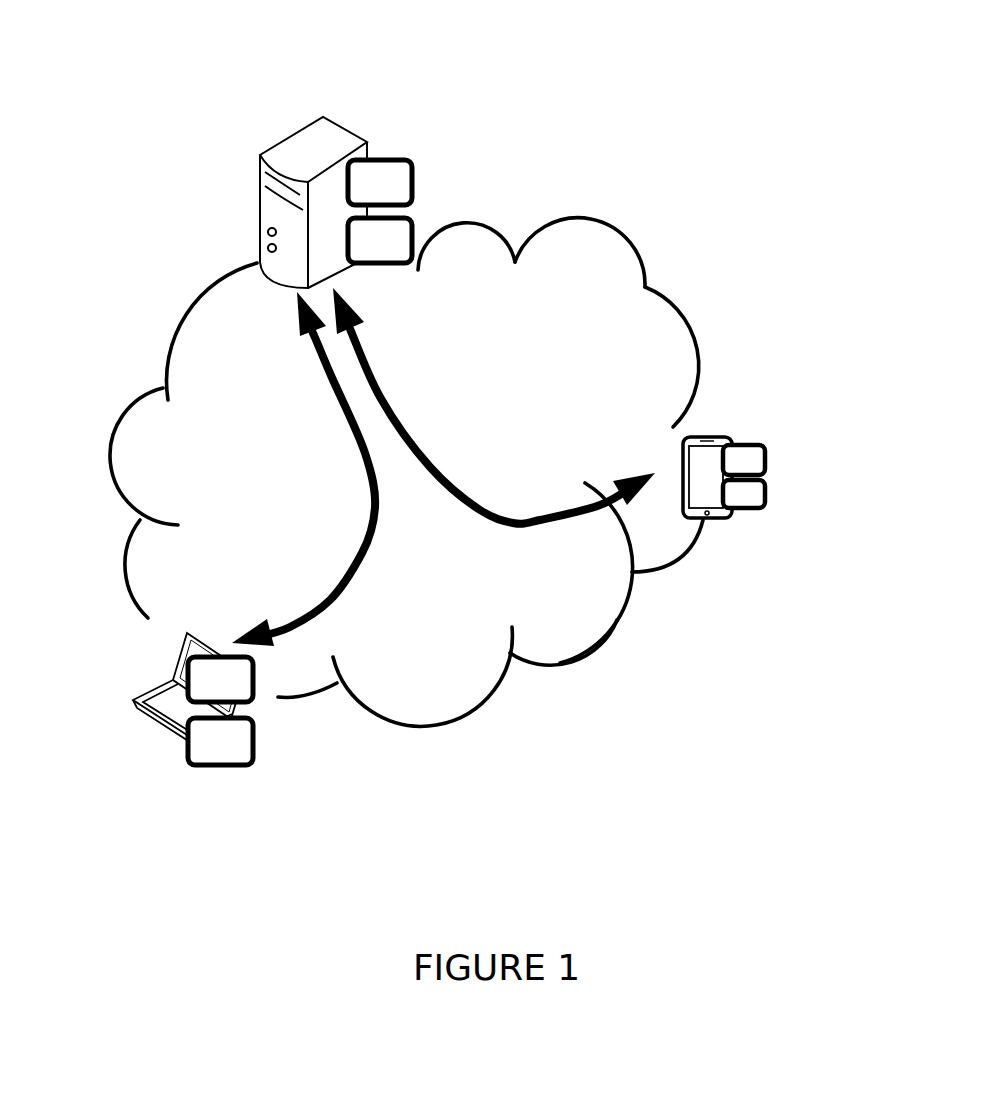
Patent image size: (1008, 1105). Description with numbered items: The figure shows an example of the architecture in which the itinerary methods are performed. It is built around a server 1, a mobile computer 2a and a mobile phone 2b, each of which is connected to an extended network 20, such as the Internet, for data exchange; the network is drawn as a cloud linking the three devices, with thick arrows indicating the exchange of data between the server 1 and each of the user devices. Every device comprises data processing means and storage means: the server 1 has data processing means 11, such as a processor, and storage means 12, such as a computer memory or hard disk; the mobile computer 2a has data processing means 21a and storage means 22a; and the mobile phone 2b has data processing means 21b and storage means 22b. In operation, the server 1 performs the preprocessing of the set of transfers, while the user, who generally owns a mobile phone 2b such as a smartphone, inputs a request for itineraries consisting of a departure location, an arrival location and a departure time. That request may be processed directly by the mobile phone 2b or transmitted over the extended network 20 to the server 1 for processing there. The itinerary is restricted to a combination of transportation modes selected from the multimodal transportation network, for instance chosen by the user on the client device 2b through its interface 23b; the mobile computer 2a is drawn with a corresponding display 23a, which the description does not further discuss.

The server 1 is at (325, 110).
The data processing means 11 is at (418, 265).
The storage means 12 is at (418, 172).
The extended network 20 is at (693, 327).
The mobile computer 2a is at (140, 695).
The data processing means 21a is at (260, 767).
The storage means 22a is at (260, 673).
The display of first user terminal 23a is at (182, 650).
The mobile phone 2b is at (710, 532).
The data processing means 21b is at (768, 508).
The storage means 22b is at (766, 440).
The interface 23b is at (696, 462).